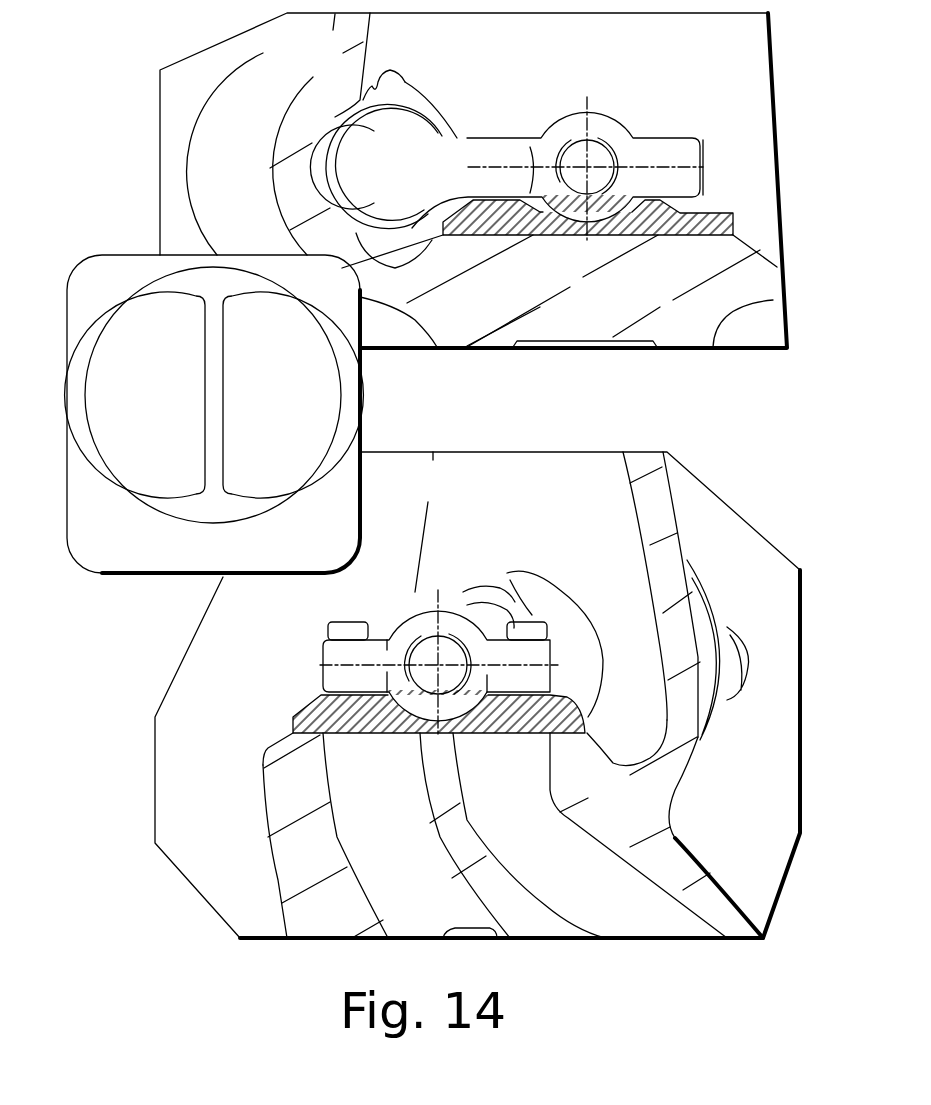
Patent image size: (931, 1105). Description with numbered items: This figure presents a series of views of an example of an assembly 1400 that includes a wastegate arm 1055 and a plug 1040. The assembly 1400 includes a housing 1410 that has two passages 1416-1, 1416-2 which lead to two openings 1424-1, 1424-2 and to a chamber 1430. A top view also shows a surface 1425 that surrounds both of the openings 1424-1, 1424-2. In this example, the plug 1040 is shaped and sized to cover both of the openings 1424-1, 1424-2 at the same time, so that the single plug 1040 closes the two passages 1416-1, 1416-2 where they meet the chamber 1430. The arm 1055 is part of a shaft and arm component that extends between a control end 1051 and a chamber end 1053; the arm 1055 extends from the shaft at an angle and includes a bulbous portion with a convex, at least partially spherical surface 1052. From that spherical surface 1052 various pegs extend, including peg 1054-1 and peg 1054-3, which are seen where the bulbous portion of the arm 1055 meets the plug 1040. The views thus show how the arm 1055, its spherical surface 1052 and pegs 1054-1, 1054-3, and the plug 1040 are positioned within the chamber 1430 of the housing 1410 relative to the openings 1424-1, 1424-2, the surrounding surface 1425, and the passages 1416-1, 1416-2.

The assembly 1400 is at (283, 65).
The chamber 1430 is at (443, 58).
The housing 1410 is at (602, 301).
The arm portion 1055 is at (389, 176).
The convex, at least partially spherical surface 1052 is at (597, 113).
The peg 1054-1 is at (658, 143).
The peg 1054-3 is at (580, 157).
The chamber end 1053 is at (703, 157).
The plug 1040 is at (713, 213).
The opening 1424-1 is at (160, 486).
The opening 1424-2 is at (253, 487).
The surface 1425 is at (218, 503).
The passage 1416-1 is at (353, 877).
The passage 1416-2 is at (520, 880).
The control end 1051 is at (744, 685).